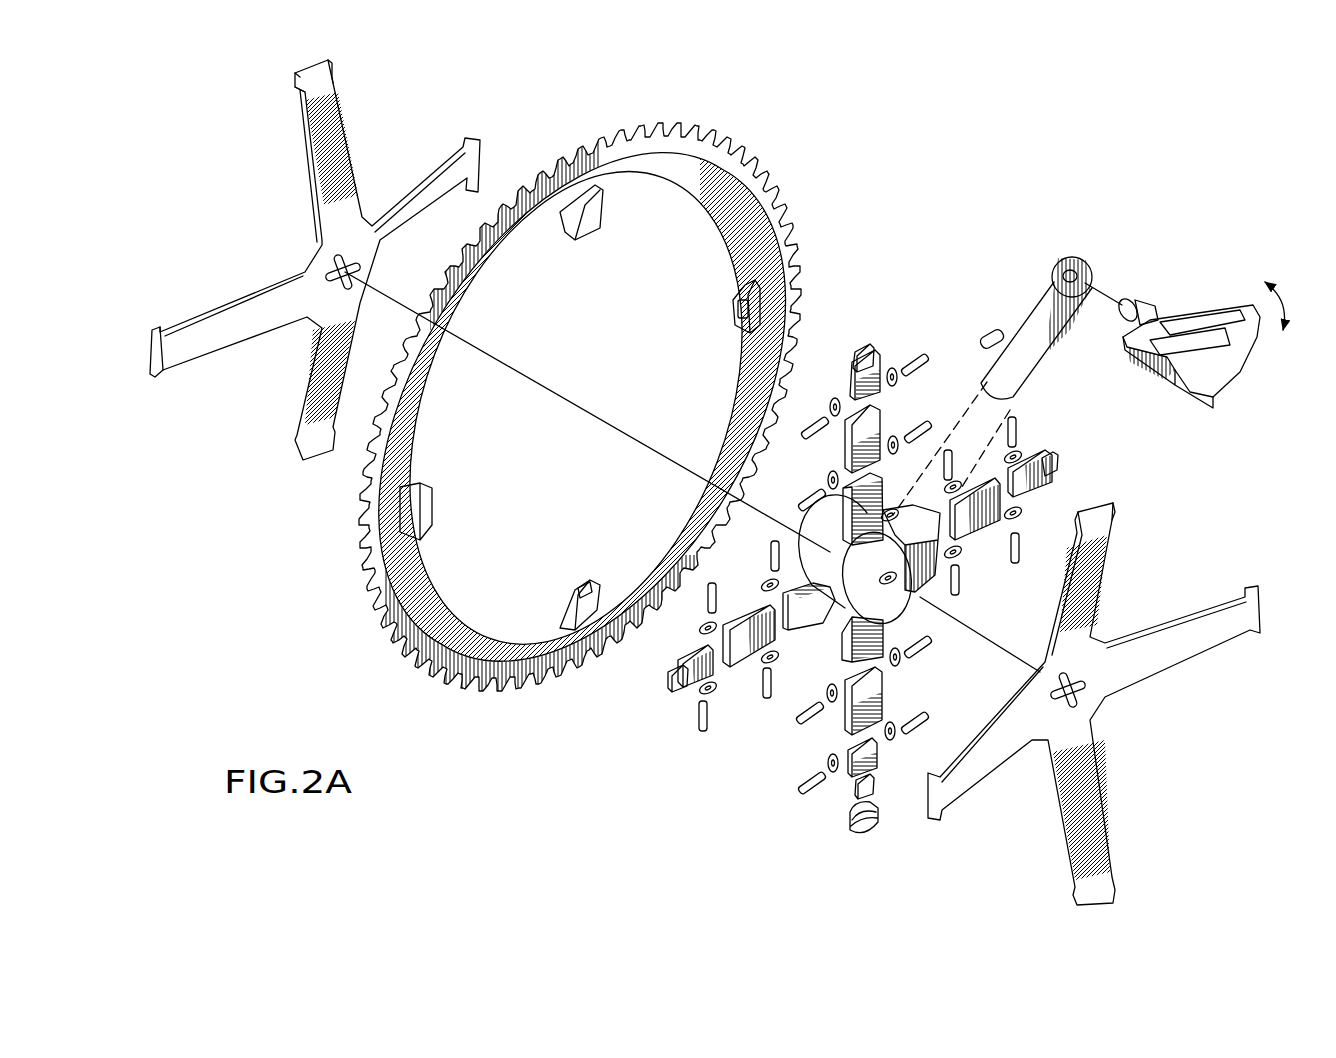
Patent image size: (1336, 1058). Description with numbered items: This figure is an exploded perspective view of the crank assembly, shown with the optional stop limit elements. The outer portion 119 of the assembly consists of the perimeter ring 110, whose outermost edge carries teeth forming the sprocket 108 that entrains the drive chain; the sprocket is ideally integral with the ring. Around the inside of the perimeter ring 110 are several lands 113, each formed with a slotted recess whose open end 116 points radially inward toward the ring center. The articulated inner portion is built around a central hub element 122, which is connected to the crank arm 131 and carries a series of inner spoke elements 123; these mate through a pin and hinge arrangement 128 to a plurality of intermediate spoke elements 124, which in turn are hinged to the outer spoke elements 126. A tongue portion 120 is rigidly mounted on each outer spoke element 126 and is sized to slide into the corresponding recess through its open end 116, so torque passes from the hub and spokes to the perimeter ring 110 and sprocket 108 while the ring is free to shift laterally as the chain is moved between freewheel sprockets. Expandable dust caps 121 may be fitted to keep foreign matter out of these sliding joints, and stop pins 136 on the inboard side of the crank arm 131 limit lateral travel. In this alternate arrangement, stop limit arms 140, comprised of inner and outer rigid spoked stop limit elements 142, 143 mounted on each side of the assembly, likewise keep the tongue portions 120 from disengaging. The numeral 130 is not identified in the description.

The sprocket 108 is at (800, 220).
The perimeter ring 110 is at (437, 385).
The lands 113 is at (583, 237).
The open end 116 is at (728, 313).
The outer portion 119 is at (363, 655).
The tongue portion 120 is at (872, 348).
The dust caps 121 is at (880, 806).
The central hub element 122 is at (876, 584).
The inner spoke elements 123 is at (842, 648).
The intermediate spoke elements 124 is at (868, 424).
The outer spoke elements 126 is at (846, 380).
The pin and hinge arrangement 128 is at (829, 478).
The hub sleeve 130 is at (938, 595).
The crank arm 131 is at (1020, 370).
The stop pins 136 is at (990, 330).
The stop limit arms 140 is at (344, 128).
The inner stop limit element 142 is at (290, 240).
The outer stop limit element 143 is at (1170, 690).